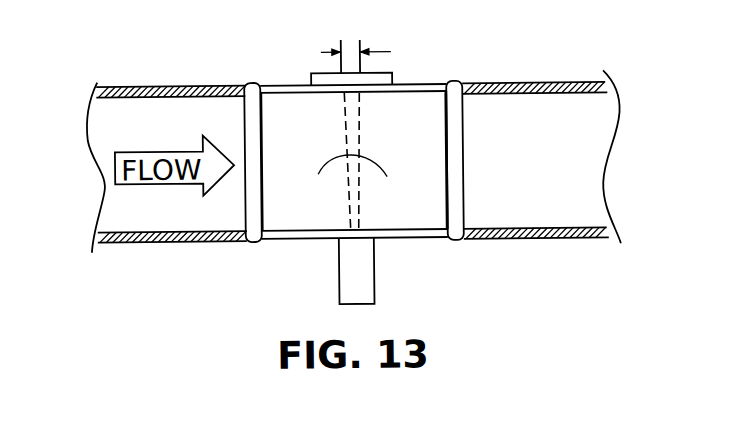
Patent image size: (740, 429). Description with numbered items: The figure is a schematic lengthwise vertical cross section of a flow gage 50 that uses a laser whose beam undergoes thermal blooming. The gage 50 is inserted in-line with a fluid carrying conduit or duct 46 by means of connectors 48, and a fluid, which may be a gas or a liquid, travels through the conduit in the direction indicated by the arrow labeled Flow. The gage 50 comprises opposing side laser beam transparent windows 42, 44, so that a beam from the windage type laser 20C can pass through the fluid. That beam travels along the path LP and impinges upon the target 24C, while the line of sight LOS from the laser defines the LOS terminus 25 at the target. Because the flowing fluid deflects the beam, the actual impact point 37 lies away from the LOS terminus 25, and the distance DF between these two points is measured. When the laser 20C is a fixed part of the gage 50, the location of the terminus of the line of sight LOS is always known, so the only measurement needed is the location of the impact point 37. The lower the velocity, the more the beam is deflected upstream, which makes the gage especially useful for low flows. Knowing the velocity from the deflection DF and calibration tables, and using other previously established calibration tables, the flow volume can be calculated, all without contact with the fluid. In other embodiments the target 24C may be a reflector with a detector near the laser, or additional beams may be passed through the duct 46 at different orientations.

The fluid carrying conduit or duct 46 is at (143, 84).
The connectors 48 is at (247, 218).
The laser beam transparent window 44 is at (285, 84).
The laser beam transparent window 42 is at (298, 240).
The target 24C is at (395, 77).
The distance (beam deflection) DF is at (386, 52).
The impact point 37 is at (340, 96).
The LOS terminus 25 is at (363, 94).
The beam path LP is at (324, 180).
The line of sight LOS is at (386, 180).
The windage type laser 20C is at (368, 292).
The gage 50 is at (420, 249).